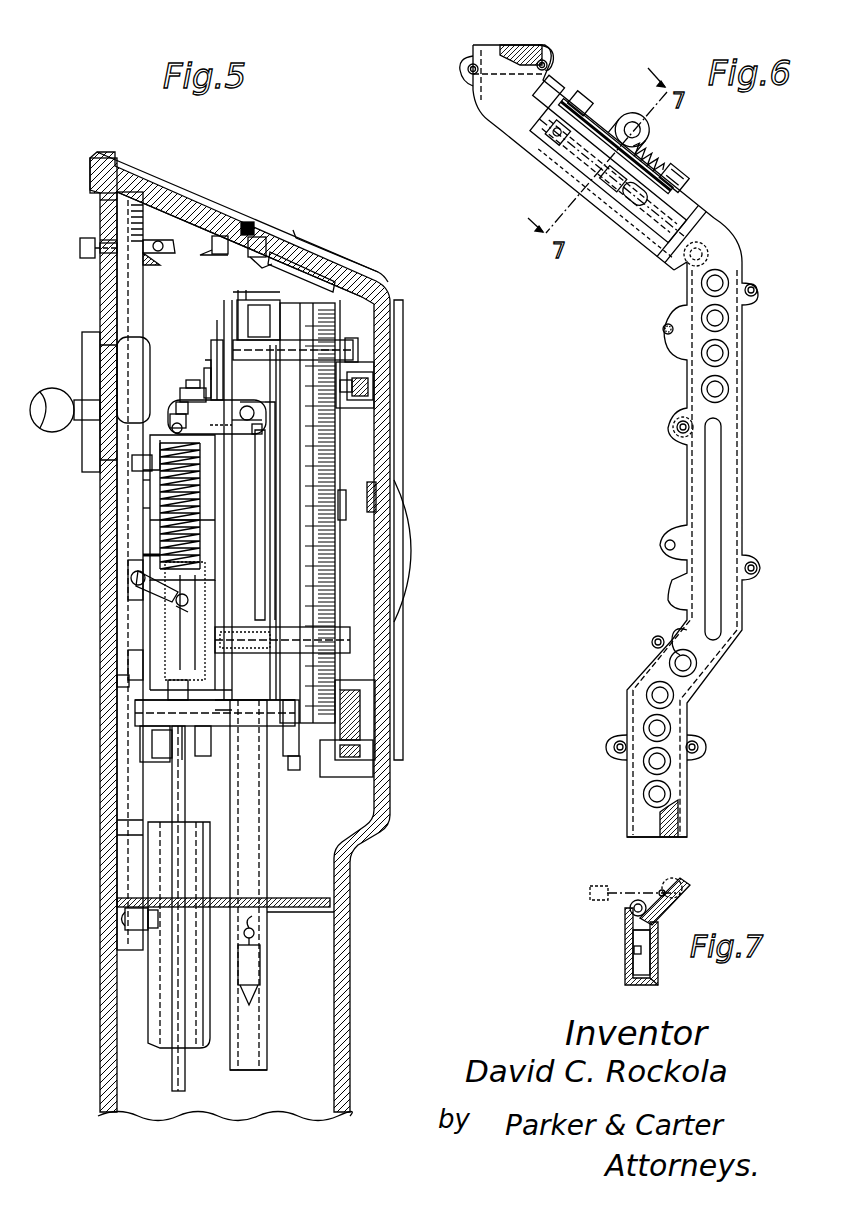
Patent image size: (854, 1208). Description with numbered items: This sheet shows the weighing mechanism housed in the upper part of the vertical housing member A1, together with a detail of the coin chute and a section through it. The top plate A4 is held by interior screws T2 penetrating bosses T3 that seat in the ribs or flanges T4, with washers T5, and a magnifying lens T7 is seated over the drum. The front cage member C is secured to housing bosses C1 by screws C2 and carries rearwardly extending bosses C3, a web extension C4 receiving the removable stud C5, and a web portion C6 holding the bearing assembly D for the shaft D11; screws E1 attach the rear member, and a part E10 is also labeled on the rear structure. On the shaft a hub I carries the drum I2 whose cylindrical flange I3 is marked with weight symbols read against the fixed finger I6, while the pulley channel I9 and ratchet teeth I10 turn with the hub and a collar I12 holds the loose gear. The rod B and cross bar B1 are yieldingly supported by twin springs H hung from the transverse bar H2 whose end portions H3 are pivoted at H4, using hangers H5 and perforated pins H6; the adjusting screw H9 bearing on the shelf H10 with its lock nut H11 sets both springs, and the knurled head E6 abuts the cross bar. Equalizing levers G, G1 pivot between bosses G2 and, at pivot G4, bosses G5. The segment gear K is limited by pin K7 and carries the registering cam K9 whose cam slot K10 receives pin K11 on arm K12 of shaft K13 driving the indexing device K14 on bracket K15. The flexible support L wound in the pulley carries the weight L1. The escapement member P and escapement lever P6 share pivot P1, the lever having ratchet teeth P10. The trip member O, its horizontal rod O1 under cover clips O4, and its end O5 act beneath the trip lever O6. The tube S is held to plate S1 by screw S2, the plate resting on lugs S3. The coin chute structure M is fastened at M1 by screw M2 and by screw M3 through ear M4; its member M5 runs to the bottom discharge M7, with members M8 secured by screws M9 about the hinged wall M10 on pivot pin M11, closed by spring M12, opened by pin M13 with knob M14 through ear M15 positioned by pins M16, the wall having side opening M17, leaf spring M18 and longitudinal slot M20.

In FIG. 5, the vertical housing member A1 is at (100, 1021).
In FIG. 5, the top plate A4 is at (333, 264).
In FIG. 5, the coin chute structure M is at (122, 283).
In FIG. 6, the coin chute structure M is at (748, 420).
In FIG. 5, the attachment point of coin chute M1 is at (130, 661).
In FIG. 6, the attachment point of coin chute M1 is at (664, 542).
In FIG. 5, the screw M2 is at (125, 682).
In FIG. 5, the screw M3 is at (135, 462).
In FIG. 5, the ear M4 is at (125, 442).
In FIG. 6, the ear M4 is at (660, 335).
In FIG. 5, the chute member M5 is at (100, 176).
In FIG. 6, the chute member M5 is at (520, 56).
In FIG. 7, the chute member M5 is at (626, 968).
In FIG. 5, the bottom coin discharge M7 is at (110, 294).
In FIG. 6, the bottom coin discharge M7 is at (676, 818).
In FIG. 5, the chute members M8 is at (130, 837).
In FIG. 6, the chute members M8 is at (495, 112).
In FIG. 6, the screws M9 is at (758, 565).
In FIG. 5, the hinged wall portion M10 is at (135, 300).
In FIG. 6, the hinged wall portion M10 is at (673, 258).
In FIG. 7, the hinged wall portion M10 is at (652, 982).
In FIG. 6, the pivot pin M11 is at (607, 117).
In FIG. 7, the pivot pin M11 is at (632, 920).
In FIG. 6, the spring M12 is at (660, 152).
In FIG. 7, the spring M12 is at (630, 912).
In FIG. 5, the pin M13 is at (100, 240).
In FIG. 7, the pin M13 is at (612, 882).
In FIG. 5, the exterior knob M14 is at (80, 250).
In FIG. 7, the exterior knob M14 is at (590, 892).
In FIG. 6, the ear M15 is at (652, 130).
In FIG. 7, the ear M15 is at (668, 905).
In FIG. 5, the pins M16 is at (160, 252).
In FIG. 7, the pins M16 is at (666, 880).
In FIG. 6, the side opening M17 is at (540, 140).
In FIG. 7, the side opening M17 is at (652, 965).
In FIG. 6, the leaf spring M18 is at (593, 164).
In FIG. 7, the leaf spring M18 is at (634, 950).
In FIG. 6, the longitudinal slot M20 is at (720, 482).
In FIG. 5, the interior screws T2 is at (249, 224).
In FIG. 5, the bosses T3 is at (257, 248).
In FIG. 5, the ribs or flanges T4 is at (200, 218).
In FIG. 5, the washers T5 is at (214, 242).
In FIG. 5, the magnifying lens T7 is at (284, 272).
In FIG. 5, the front cage member C is at (320, 458).
In FIG. 5, the bosses C1 is at (370, 382).
In FIG. 5, the screws C2 is at (373, 395).
In FIG. 5, the rearwardly extending bosses C3 is at (262, 316).
In FIG. 5, the web extension C4 is at (352, 366).
In FIG. 5, the stud C5 is at (338, 345).
In FIG. 5, the web portion C6 is at (342, 497).
In FIG. 5, the hub I is at (340, 527).
In FIG. 5, the drum I2 is at (268, 1024).
In FIG. 5, the cylindrical flange I3 is at (335, 426).
In FIG. 5, the fixed finger I6 is at (242, 300).
In FIG. 5, the pulley channel I9 is at (268, 511).
In FIG. 5, the ratchet teeth I10 is at (300, 468).
In FIG. 5, the collar I12 is at (140, 512).
In FIG. 5, the ball bearing assembly D is at (402, 520).
In FIG. 5, the shaft D11 is at (380, 502).
In FIG. 5, the screws E1 is at (217, 320).
In FIG. 5, the knurled head E6 is at (160, 692).
In FIG. 5, the part E10 is at (252, 420).
In FIG. 5, the escapement member P is at (218, 356).
In FIG. 5, the pivot P1 is at (210, 356).
In FIG. 5, the escapement lever P6 is at (210, 372).
In FIG. 5, the ratchet teeth P10 is at (182, 762).
In FIG. 5, the twin springs H is at (150, 492).
In FIG. 5, the lock nut H11 is at (180, 390).
In FIG. 5, the transverse bar H2 is at (182, 406).
In FIG. 5, the forwardly turned end portions H3 is at (254, 402).
In FIG. 5, the pivot H4 is at (246, 405).
In FIG. 5, the hangers H5 is at (100, 437).
In FIG. 5, the perforated pins H6 is at (170, 707).
In FIG. 5, the adjusting screw H9 is at (190, 383).
In FIG. 5, the shelf H10 is at (182, 422).
In FIG. 5, the trip member O is at (150, 517).
In FIG. 5, the horizontal rod portion O1 is at (150, 472).
In FIG. 5, the cover clips O4 is at (139, 489).
In FIG. 5, the end of trip wire O5 is at (218, 426).
In FIG. 5, the trip lever O6 is at (266, 431).
In FIG. 5, the segment gear K is at (196, 479).
In FIG. 5, the pin K11 is at (160, 603).
In FIG. 5, the pin K7 is at (165, 702).
In FIG. 5, the registering cam K9 is at (160, 642).
In FIG. 5, the cam slot K10 is at (165, 622).
In FIG. 5, the arm K12 is at (150, 592).
In FIG. 5, the shaft K13 is at (133, 582).
In FIG. 5, the indexing device K14 is at (140, 572).
In FIG. 5, the bracket structure K15 is at (150, 537).
In FIG. 5, the equalizing lever G is at (140, 737).
In FIG. 5, the equalizing lever G1 is at (291, 741).
In FIG. 5, the bosses G2 is at (205, 756).
In FIG. 5, the pivot G4 is at (294, 762).
In FIG. 5, the bosses G5 is at (166, 766).
In FIG. 5, the rod B is at (172, 812).
In FIG. 5, the cross bar B1 is at (175, 717).
In FIG. 5, the tube S is at (150, 886).
In FIG. 5, the top plate S1 is at (282, 897).
In FIG. 5, the screw S2 is at (130, 922).
In FIG. 5, the lugs S3 is at (320, 911).
In FIG. 5, the flexible support L is at (254, 937).
In FIG. 5, the weight L1 is at (256, 962).